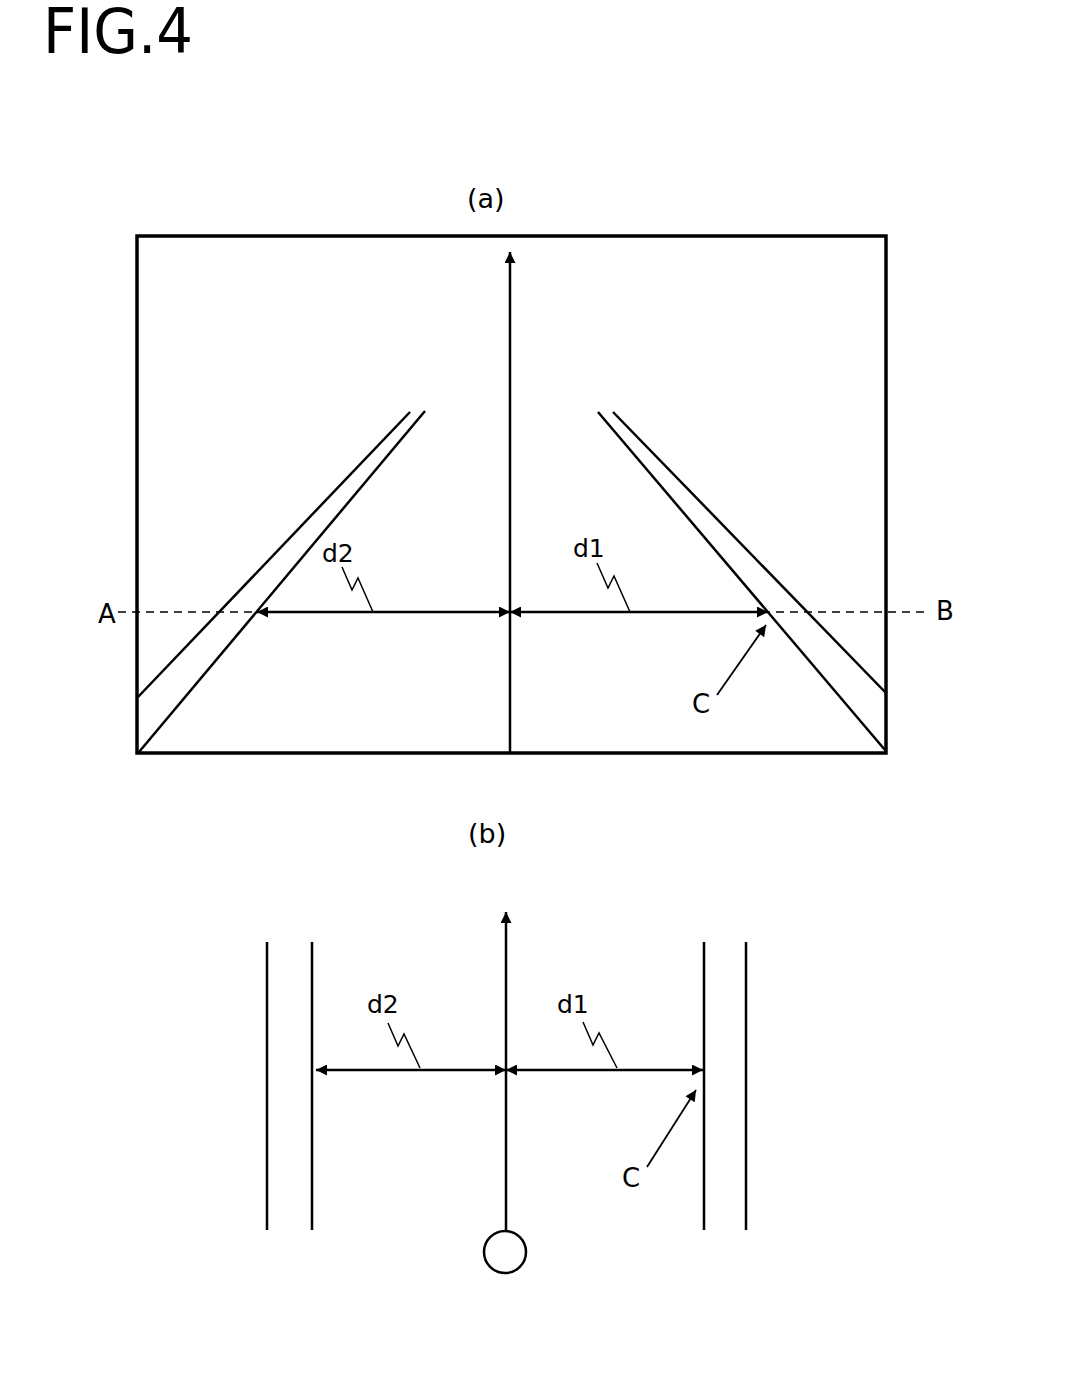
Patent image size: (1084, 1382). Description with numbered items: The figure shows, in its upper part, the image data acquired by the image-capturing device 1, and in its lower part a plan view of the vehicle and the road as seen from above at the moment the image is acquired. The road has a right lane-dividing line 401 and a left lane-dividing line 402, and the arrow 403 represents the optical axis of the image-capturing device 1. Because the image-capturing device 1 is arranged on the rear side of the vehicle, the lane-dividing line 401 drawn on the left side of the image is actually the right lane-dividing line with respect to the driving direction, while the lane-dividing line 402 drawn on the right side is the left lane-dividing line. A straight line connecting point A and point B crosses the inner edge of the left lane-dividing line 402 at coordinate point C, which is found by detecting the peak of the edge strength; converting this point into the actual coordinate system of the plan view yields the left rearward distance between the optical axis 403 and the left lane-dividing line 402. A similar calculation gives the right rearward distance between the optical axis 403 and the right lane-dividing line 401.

The right lane-dividing line 401 is at (358, 458).
The left lane-dividing line 402 is at (663, 463).
The optical axis 403 is at (510, 308).
The image-capturing device 1 is at (527, 1255).